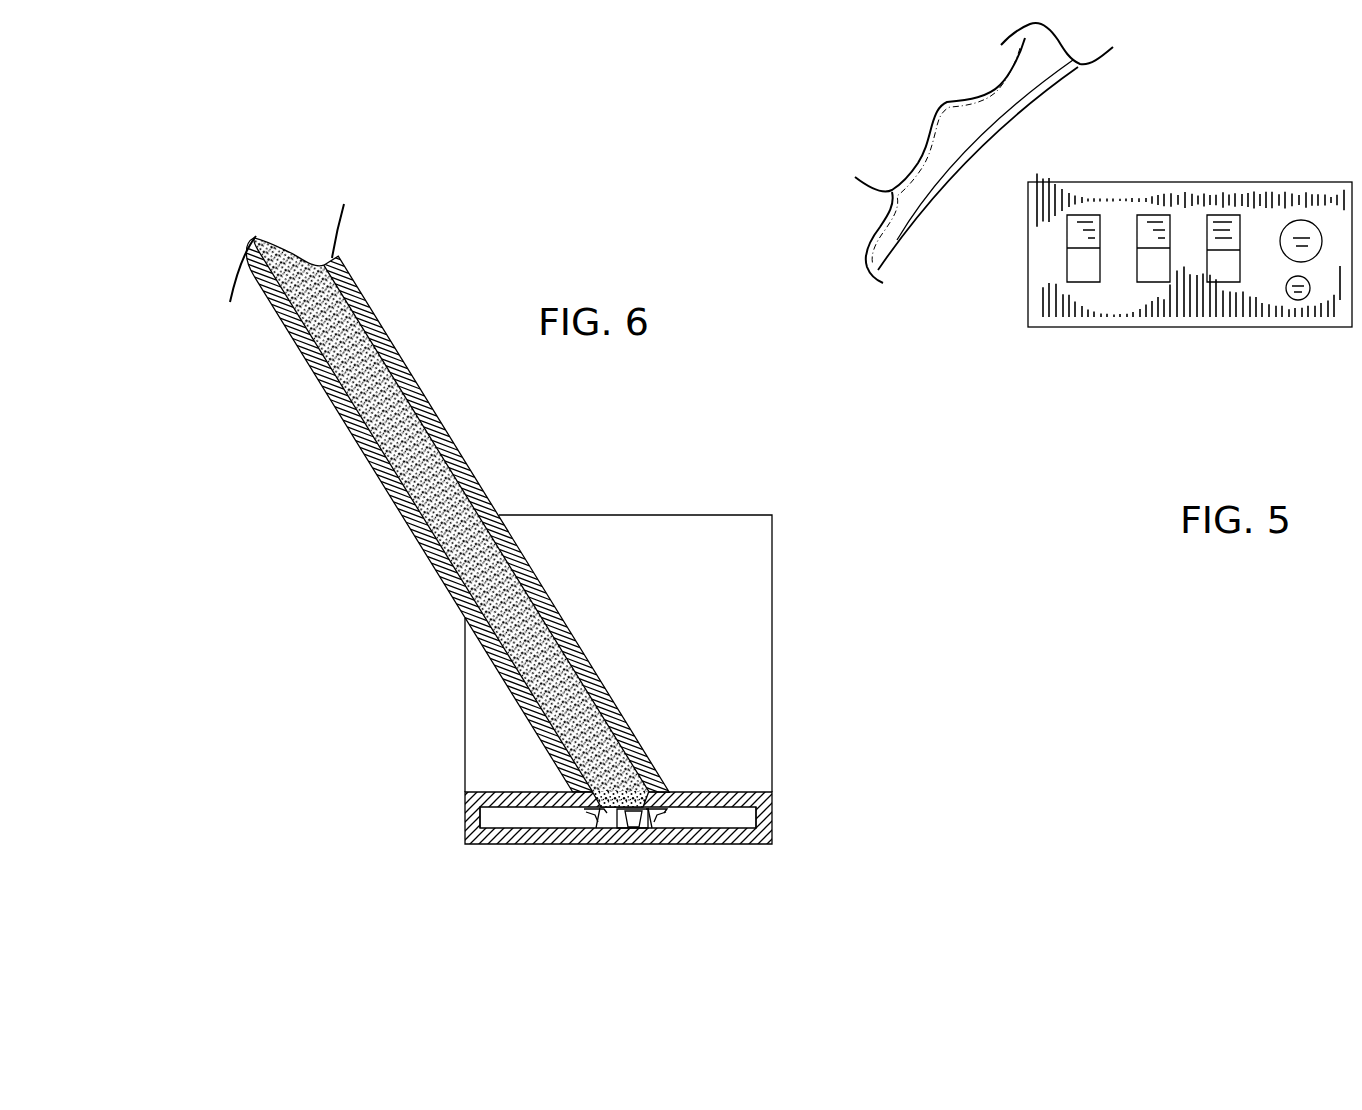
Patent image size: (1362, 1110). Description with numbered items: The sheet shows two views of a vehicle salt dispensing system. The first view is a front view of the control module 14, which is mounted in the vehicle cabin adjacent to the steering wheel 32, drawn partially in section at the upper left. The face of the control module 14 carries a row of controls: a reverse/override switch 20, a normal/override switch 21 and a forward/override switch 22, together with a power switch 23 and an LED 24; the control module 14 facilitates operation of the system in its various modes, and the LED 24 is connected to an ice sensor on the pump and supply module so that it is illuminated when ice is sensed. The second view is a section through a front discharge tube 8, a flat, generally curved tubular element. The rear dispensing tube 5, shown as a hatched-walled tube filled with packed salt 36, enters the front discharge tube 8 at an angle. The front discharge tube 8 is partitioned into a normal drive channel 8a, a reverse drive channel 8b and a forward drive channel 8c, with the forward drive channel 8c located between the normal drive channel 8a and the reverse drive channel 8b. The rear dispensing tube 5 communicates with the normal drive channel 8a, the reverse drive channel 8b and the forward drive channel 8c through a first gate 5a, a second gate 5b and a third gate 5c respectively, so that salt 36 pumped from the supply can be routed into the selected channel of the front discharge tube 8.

In FIG. 6, the rear dispensing tube 5 is at (375, 317).
In FIG. 6, the packed salt 36 is at (475, 572).
In FIG. 6, the front discharge tube 8 is at (727, 515).
In FIG. 6, the normal drive channel 8a is at (496, 825).
In FIG. 6, the reverse drive channel 8b is at (756, 826).
In FIG. 6, the forward drive channel 8c is at (630, 820).
In FIG. 6, the first gate 5a is at (600, 813).
In FIG. 6, the second gate 5b is at (667, 818).
In FIG. 6, the third gate 5c is at (653, 775).
In FIG. 5, the control module 14 is at (1115, 182).
In FIG. 5, the reverse/override switch 20 is at (1078, 260).
In FIG. 5, the normal/override switch 21 is at (1152, 222).
In FIG. 5, the forward/override switch 22 is at (1222, 282).
In FIG. 5, the power switch 23 is at (1300, 230).
In FIG. 5, the LED 24 is at (1298, 300).
In FIG. 5, the steering wheel 32 is at (905, 240).